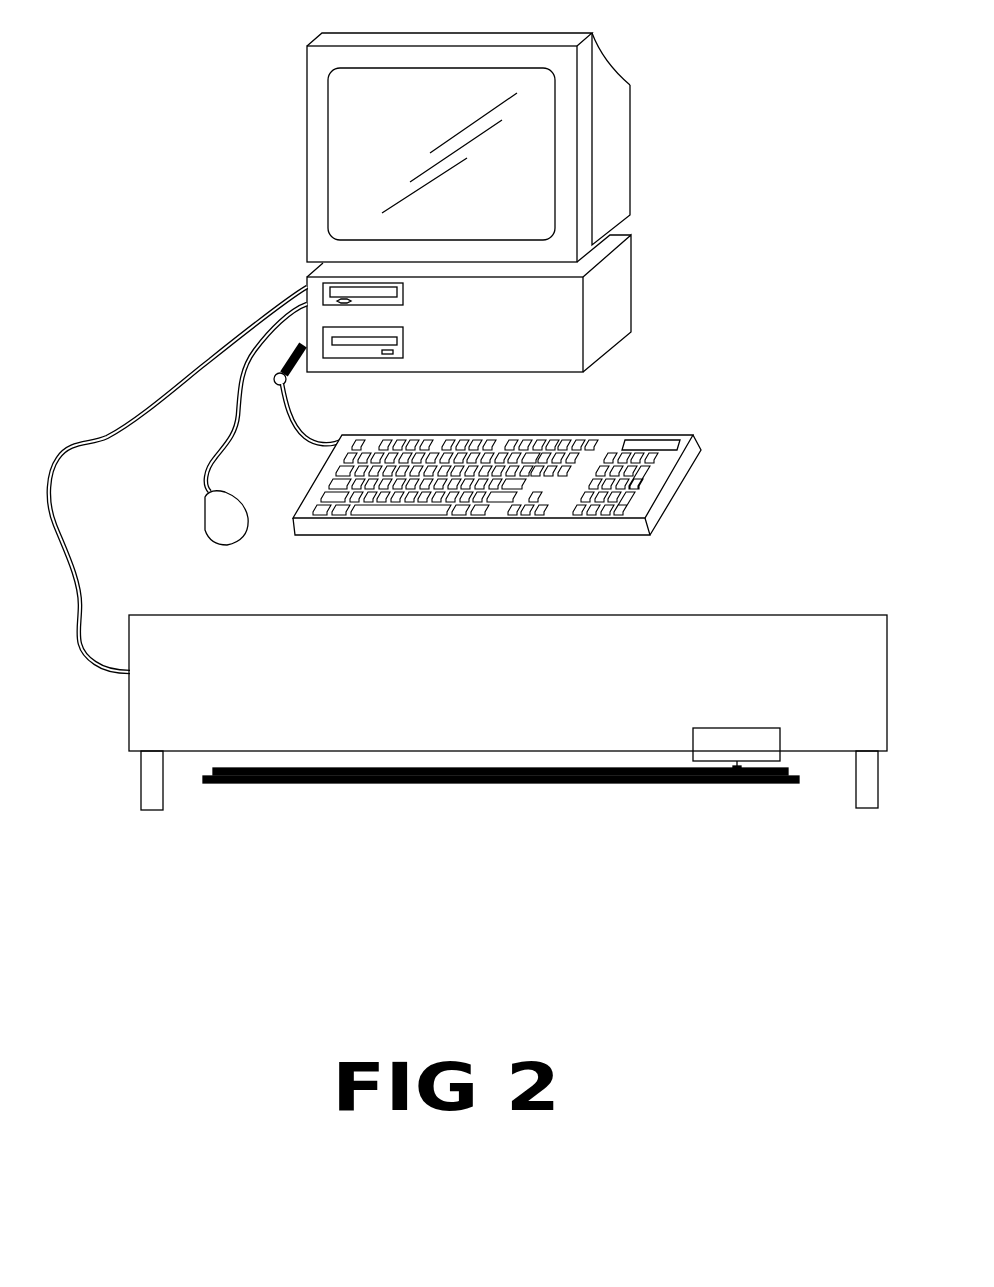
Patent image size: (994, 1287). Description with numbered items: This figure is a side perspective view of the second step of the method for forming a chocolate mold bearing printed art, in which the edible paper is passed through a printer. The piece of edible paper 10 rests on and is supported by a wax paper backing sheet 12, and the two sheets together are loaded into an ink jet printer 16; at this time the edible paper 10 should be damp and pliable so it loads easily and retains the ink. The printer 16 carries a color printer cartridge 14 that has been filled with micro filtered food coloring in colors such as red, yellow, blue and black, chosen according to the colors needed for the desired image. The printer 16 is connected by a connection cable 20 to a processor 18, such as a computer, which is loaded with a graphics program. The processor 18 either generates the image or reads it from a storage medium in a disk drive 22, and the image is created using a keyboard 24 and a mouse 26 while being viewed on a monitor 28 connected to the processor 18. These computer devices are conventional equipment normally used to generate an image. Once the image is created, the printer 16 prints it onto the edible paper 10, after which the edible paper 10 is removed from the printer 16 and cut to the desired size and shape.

The piece of edible paper 10 is at (780, 770).
The backing sheet 12 is at (748, 783).
The color printer cartridge 14 is at (732, 743).
The printer 16 is at (540, 699).
The processor 18 is at (568, 310).
The connection cable 20 is at (83, 442).
The disk drive 22 is at (335, 293).
The keyboard 24 is at (617, 438).
The mouse 26 is at (230, 528).
The monitor 28 is at (353, 117).